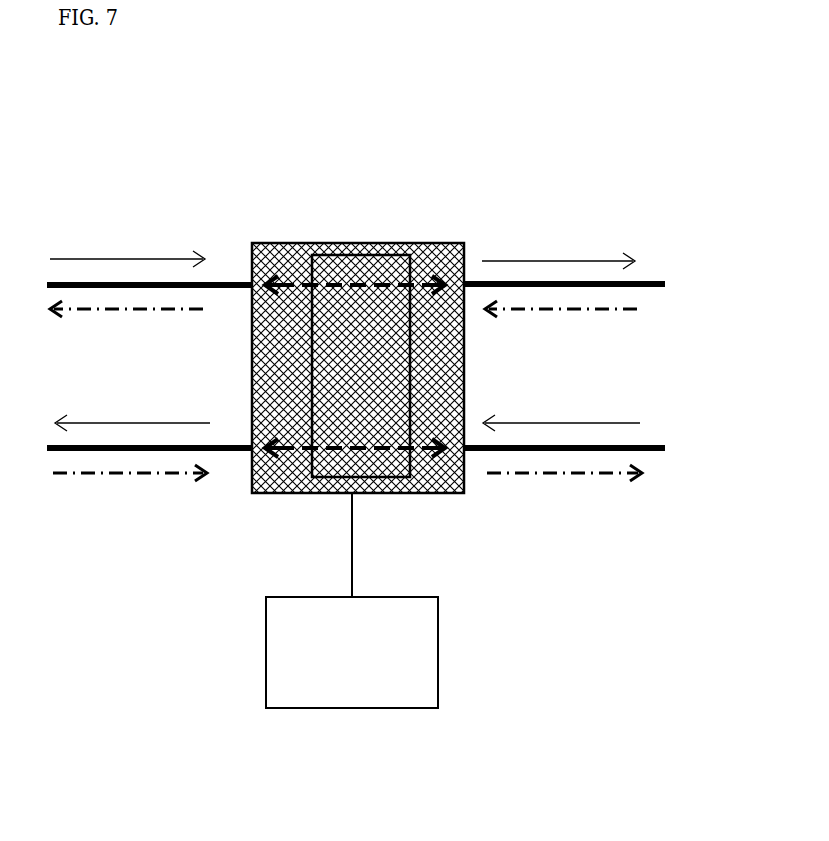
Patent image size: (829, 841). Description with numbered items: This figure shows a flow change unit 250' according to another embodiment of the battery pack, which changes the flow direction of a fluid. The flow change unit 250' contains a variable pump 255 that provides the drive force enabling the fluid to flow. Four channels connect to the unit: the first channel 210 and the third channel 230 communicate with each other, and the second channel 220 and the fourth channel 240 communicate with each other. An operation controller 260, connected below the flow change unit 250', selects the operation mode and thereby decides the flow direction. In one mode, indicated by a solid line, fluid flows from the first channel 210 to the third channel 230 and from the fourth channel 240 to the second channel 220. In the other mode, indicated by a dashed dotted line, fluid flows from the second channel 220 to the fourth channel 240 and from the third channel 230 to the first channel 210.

The first channel 210 is at (100, 283).
The second channel 220 is at (135, 448).
The third channel 230 is at (528, 282).
The fourth channel 240 is at (557, 450).
The flow change unit 250' is at (358, 307).
The variable pump 255 is at (330, 243).
The operation controller 260 is at (373, 673).